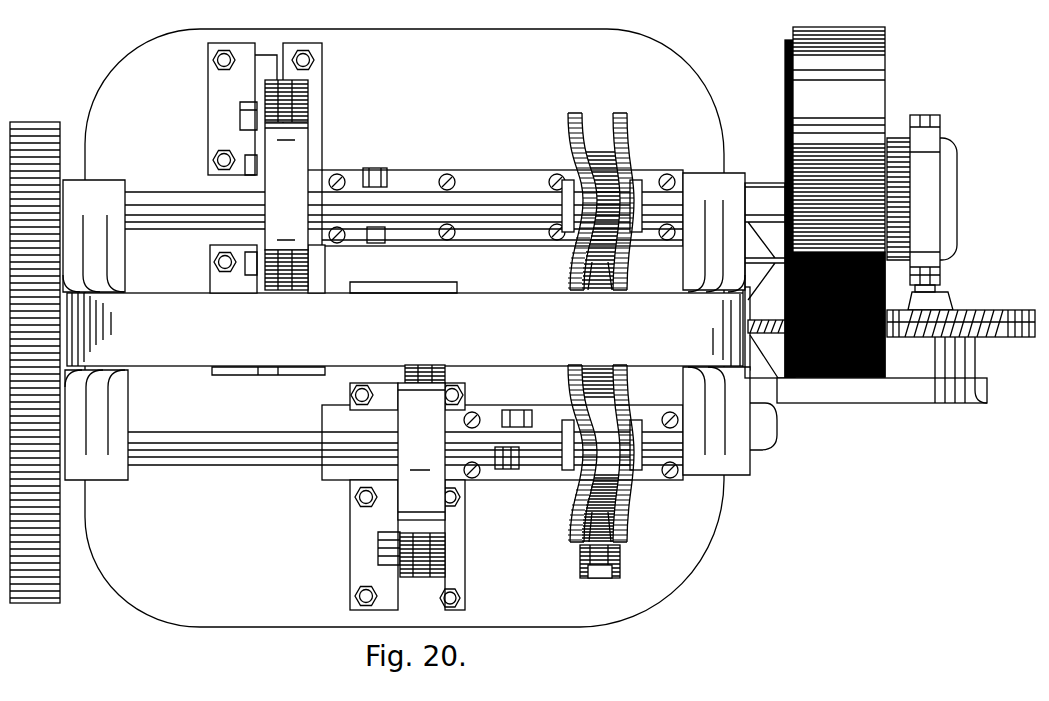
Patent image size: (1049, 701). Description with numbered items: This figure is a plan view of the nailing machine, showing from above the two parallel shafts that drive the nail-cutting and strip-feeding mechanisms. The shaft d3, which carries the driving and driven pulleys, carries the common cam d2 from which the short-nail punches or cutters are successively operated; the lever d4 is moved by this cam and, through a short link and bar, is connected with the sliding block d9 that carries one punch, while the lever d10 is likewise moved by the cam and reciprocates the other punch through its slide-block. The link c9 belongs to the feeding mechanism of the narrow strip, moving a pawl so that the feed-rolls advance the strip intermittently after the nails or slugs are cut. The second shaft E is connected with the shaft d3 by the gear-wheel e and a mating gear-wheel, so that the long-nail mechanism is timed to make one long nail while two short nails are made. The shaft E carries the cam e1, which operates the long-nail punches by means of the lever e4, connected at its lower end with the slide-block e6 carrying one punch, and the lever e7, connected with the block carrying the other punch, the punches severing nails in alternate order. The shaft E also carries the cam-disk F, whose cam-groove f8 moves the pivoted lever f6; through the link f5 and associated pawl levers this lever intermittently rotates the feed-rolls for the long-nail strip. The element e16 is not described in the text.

The gear-wheel e is at (35, 350).
The sliding block d9 is at (263, 70).
The lever d4 is at (310, 102).
The cam d2 is at (300, 143).
The lever d10 is at (308, 283).
The shaft d3 is at (415, 198).
The link c9 is at (432, 240).
The upper cam e16 is at (617, 158).
The shaft E is at (250, 450).
The cam e1 is at (421, 451).
The lever e4 is at (447, 372).
The lever e7 is at (447, 557).
The slide-block e6 is at (403, 583).
The link f5 is at (560, 472).
The cam-disk F is at (594, 453).
The cam-groove f8 is at (562, 512).
The lever f6 is at (622, 549).